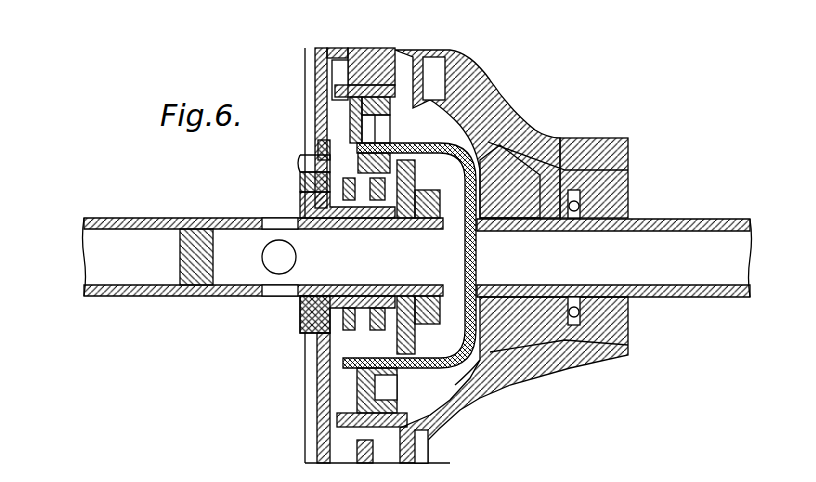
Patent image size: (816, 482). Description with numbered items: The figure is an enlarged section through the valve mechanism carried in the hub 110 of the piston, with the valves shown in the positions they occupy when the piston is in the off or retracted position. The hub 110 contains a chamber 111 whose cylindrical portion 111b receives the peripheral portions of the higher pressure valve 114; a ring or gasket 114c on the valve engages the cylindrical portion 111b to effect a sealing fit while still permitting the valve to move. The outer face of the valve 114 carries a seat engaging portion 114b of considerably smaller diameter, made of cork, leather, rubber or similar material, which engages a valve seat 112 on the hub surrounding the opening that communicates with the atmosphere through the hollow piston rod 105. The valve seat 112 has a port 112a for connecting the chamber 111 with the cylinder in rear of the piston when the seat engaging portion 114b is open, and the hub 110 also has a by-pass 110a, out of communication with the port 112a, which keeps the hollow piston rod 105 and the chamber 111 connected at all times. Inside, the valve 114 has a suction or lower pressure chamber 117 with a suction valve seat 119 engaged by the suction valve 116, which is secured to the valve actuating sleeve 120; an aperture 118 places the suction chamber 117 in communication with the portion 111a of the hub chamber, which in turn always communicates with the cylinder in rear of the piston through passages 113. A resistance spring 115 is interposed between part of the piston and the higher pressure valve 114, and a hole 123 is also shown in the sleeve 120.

The hollow piston rod 105 is at (672, 219).
The hub of the piston 110 is at (485, 150).
The by-pass 110a is at (570, 375).
The chamber 111 is at (470, 390).
The portion of the piston hub chamber 111a is at (340, 348).
The cylindrical portion 111b is at (405, 80).
The valve seat 112 is at (596, 146).
The port 112a is at (528, 360).
The passages 113 is at (362, 62).
The higher pressure valve 114 is at (478, 158).
The seat engaging portion 114b is at (545, 148).
The ring or gasket 114c is at (355, 104).
The resistance spring 115 is at (312, 192).
The suction valve 116 is at (460, 140).
The suction or lower pressure chamber 117 is at (455, 385).
The aperture 118 is at (380, 296).
The suction valve seat 119 is at (318, 168).
The valve actuating part or sleeve 120 is at (190, 218).
The shaft hole 123 is at (283, 270).